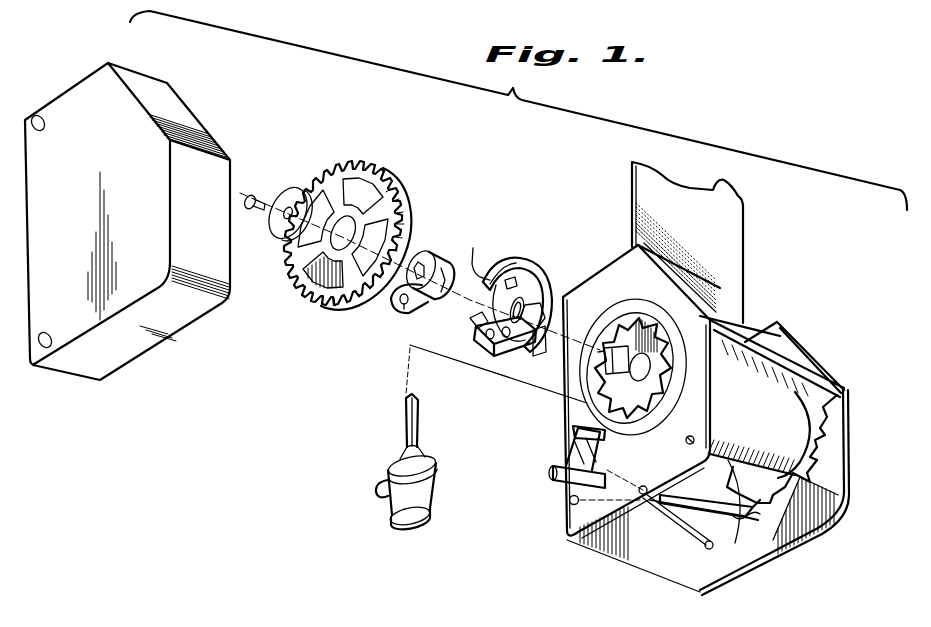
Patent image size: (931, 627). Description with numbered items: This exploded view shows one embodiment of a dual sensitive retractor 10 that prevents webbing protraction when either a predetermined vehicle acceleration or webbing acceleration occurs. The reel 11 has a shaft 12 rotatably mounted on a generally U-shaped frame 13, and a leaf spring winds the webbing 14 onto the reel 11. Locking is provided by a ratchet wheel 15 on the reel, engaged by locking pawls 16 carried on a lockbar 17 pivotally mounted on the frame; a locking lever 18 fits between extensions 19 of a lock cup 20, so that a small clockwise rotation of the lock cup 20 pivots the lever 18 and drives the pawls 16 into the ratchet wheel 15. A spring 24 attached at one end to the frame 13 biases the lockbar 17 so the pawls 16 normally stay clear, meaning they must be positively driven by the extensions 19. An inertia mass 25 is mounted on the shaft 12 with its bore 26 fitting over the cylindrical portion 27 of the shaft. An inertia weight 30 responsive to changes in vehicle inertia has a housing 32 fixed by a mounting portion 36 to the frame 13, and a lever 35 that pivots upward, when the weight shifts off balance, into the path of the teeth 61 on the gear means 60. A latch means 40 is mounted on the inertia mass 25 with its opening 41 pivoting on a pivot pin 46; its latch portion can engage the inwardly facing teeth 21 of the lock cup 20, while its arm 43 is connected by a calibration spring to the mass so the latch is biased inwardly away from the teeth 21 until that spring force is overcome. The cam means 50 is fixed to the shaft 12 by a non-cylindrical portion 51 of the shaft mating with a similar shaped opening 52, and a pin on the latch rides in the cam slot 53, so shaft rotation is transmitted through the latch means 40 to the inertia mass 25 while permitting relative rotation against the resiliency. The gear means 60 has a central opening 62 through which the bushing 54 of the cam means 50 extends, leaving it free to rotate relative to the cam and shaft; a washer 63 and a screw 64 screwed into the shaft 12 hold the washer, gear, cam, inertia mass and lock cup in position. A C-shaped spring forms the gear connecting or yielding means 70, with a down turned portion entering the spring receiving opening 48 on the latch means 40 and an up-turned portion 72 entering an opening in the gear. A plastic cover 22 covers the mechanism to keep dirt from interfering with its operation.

The dual sensitive retractor 10 is at (705, 386).
The reel 11 is at (812, 440).
The shaft 12 is at (632, 352).
The frame 13 is at (605, 538).
The webbing 14 is at (725, 190).
The ratchet wheel 15 is at (843, 498).
The locking pawls 16 is at (748, 518).
The lockbar 17 is at (747, 521).
The locking lever 18 is at (570, 500).
The extensions 19 is at (576, 433).
The lock cup 20 is at (683, 368).
The inwardly facing teeth 21 is at (658, 350).
The plastic cover 22 is at (88, 366).
The spring 24 is at (667, 503).
The inertia mass 25 is at (521, 287).
The bore 26 is at (512, 280).
The cylindrical portion 27 is at (660, 347).
The inertia weight 30 is at (366, 482).
The housing 32 is at (405, 524).
The lever 35 is at (405, 414).
The mounting portion 36 is at (388, 468).
The latch means 40 is at (483, 368).
The opening 41 is at (487, 340).
The arm 43 is at (472, 322).
The pivot pin 46 is at (507, 342).
The spring receiving opening 48 is at (543, 334).
The cam means 50 is at (405, 252).
The non-cylindrical portion 51 is at (668, 402).
The opening 52 is at (418, 262).
The cam slot 53 is at (402, 302).
The bushing 54 is at (416, 316).
The gear means 60 is at (330, 218).
The teeth 61 is at (340, 316).
The central opening 62 is at (336, 249).
The washer 63 is at (286, 203).
The screw 64 is at (252, 194).
The gear connecting or yielding means 70 is at (500, 266).
The up-turned portion 72 is at (474, 252).